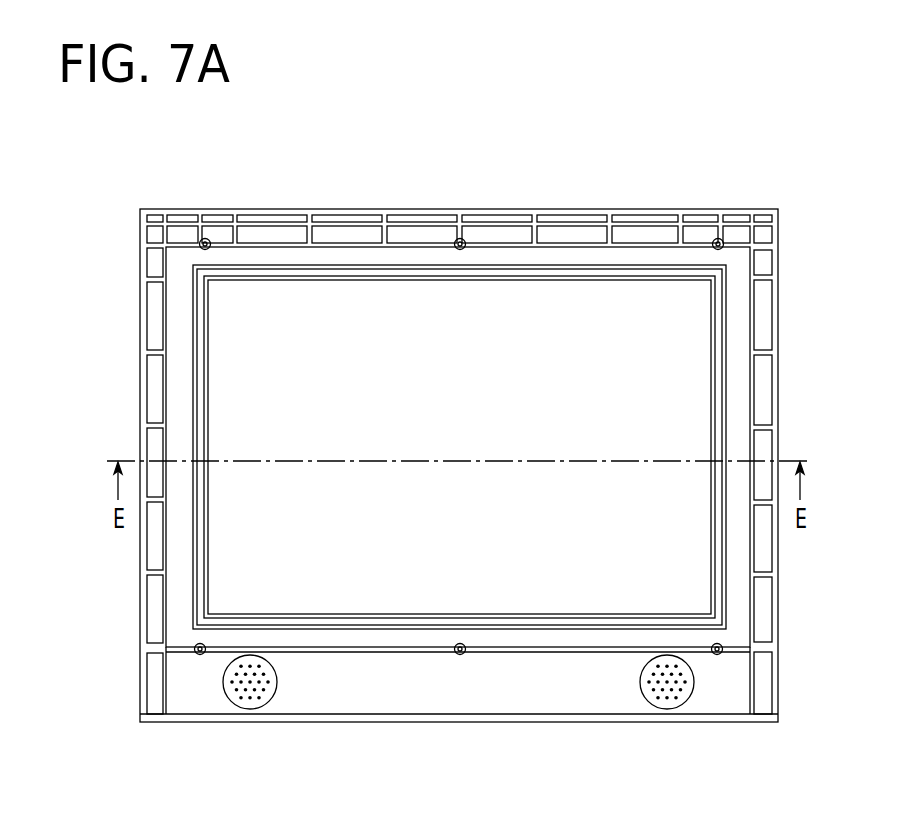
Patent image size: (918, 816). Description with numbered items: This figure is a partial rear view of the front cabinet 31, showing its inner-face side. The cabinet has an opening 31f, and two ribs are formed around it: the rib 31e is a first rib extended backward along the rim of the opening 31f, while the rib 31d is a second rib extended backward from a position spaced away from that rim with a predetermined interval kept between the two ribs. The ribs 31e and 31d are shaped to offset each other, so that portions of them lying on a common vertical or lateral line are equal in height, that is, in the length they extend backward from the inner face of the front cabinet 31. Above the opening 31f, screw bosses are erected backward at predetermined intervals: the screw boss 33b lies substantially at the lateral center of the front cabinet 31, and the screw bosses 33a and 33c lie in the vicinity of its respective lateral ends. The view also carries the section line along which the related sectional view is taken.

The front cabinet 31 is at (600, 209).
The screw boss 33a is at (208, 239).
The screw boss 33b is at (463, 239).
The screw boss 33c is at (720, 239).
The rib 31d is at (197, 407).
The rib 31e is at (204, 355).
The opening 31f is at (212, 315).